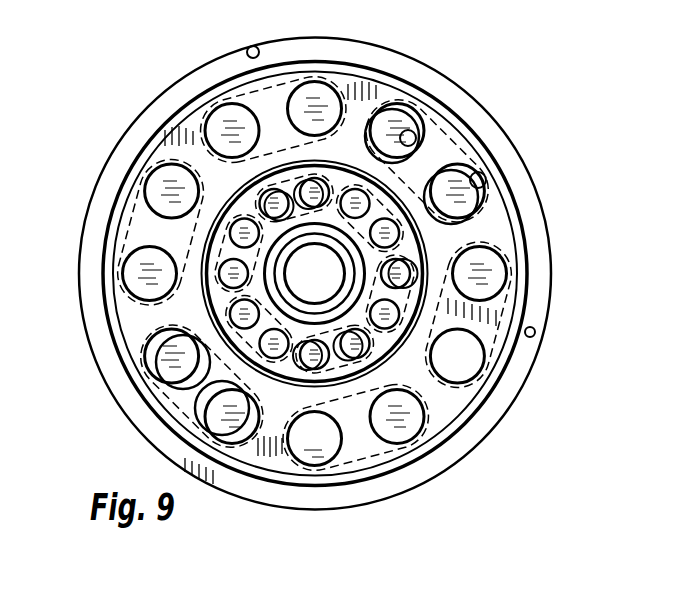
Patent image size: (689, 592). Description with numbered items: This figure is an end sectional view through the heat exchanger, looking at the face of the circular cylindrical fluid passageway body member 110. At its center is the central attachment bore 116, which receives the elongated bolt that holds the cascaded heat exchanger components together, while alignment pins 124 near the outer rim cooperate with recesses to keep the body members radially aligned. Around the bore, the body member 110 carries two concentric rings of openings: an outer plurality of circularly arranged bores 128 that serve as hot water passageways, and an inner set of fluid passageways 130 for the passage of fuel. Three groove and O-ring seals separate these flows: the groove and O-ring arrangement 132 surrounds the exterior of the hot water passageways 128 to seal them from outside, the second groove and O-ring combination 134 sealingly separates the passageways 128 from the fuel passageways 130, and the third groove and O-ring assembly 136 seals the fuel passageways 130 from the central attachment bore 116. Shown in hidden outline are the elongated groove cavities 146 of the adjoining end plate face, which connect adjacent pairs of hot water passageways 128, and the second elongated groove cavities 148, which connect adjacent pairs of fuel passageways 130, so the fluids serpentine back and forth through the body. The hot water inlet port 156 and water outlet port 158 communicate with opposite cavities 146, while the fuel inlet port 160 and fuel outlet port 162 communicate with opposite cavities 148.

The fluid passageway body member 110 is at (430, 480).
The central attachment bore 116 is at (340, 284).
The alignment pins 124 is at (534, 329).
The bores (hot water passageways) 128 is at (485, 175).
The fluid passageways (fuel passageways) 130 is at (217, 283).
The groove and O-ring arrangement 132 is at (505, 340).
The second groove and O-ring combination 134 is at (328, 322).
The third groove and O-ring assembly 136 is at (370, 333).
The elongated groove cavities 146 is at (132, 220).
The second elongated groove cavities 148 is at (437, 237).
The hot water inlet port 156 is at (427, 137).
The water outlet port 158 is at (168, 390).
The fuel inlet port 160 is at (352, 324).
The fuel outlet port 162 is at (270, 191).